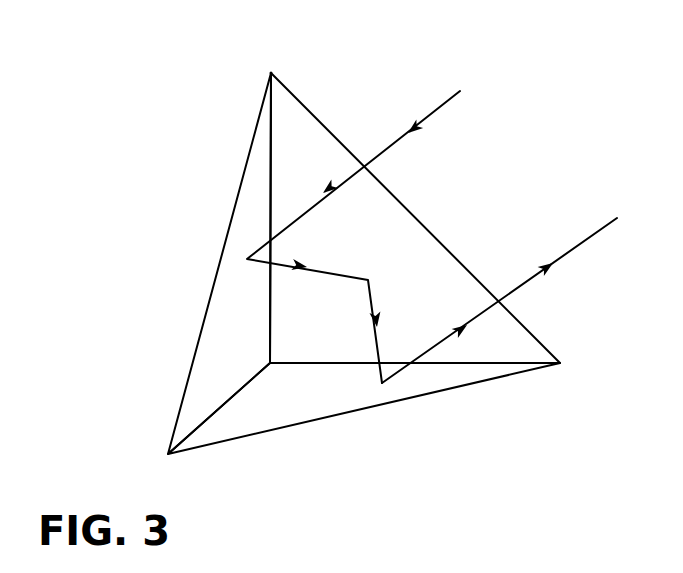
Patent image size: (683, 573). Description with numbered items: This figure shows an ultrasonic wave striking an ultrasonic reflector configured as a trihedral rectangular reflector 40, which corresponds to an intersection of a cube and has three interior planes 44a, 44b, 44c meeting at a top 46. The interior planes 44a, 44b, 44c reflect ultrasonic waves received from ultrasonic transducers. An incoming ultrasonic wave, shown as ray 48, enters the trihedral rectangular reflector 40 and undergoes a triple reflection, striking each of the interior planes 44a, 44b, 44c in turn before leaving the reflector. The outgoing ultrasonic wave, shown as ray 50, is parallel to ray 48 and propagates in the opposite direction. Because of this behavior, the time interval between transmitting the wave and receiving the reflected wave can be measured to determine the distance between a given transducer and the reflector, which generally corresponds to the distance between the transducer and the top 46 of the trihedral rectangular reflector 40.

The trihedral rectangular reflector 40 is at (296, 250).
The interior plane 44a is at (425, 260).
The interior plane 44b is at (233, 295).
The interior plane 44c is at (338, 393).
The top 46 is at (271, 73).
The ray 48 is at (422, 116).
The ray 50 is at (573, 250).